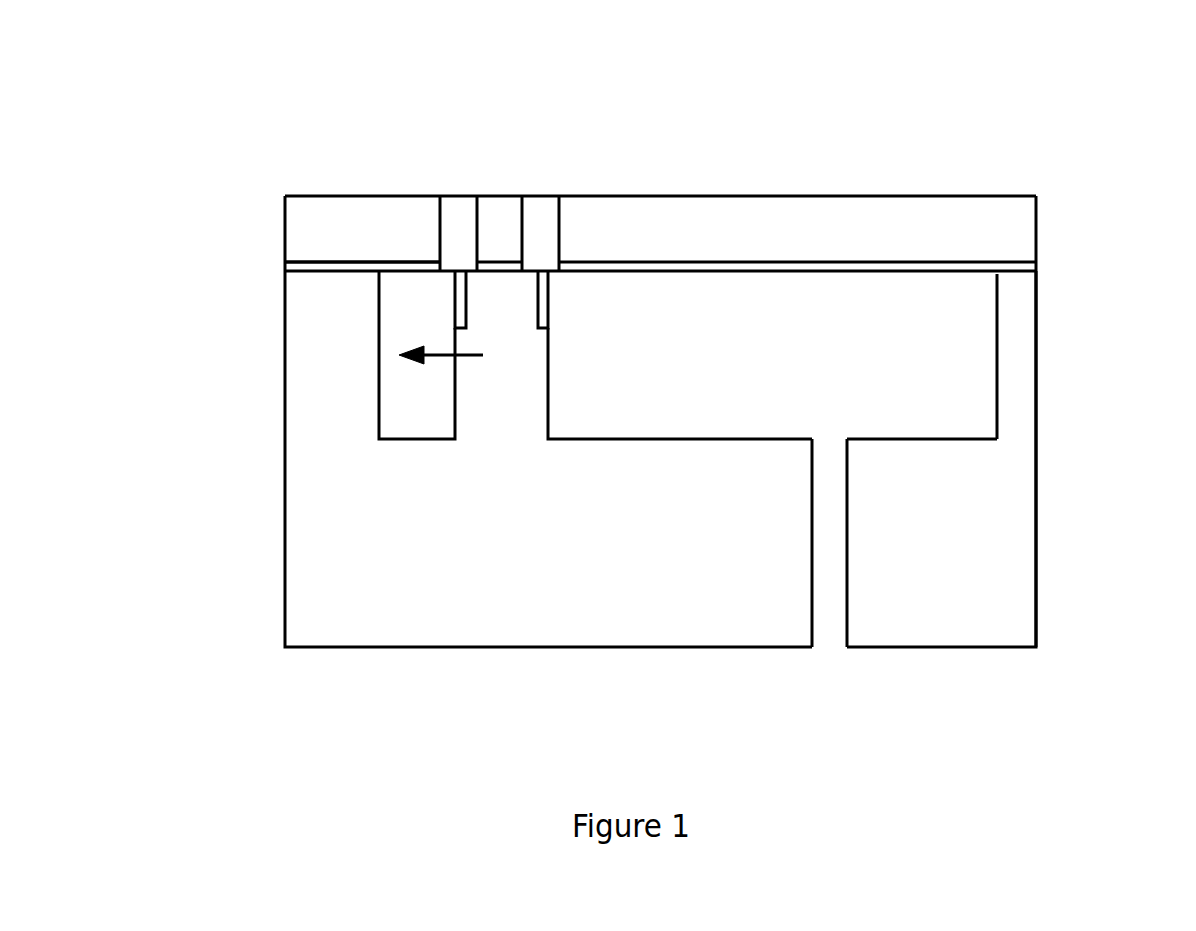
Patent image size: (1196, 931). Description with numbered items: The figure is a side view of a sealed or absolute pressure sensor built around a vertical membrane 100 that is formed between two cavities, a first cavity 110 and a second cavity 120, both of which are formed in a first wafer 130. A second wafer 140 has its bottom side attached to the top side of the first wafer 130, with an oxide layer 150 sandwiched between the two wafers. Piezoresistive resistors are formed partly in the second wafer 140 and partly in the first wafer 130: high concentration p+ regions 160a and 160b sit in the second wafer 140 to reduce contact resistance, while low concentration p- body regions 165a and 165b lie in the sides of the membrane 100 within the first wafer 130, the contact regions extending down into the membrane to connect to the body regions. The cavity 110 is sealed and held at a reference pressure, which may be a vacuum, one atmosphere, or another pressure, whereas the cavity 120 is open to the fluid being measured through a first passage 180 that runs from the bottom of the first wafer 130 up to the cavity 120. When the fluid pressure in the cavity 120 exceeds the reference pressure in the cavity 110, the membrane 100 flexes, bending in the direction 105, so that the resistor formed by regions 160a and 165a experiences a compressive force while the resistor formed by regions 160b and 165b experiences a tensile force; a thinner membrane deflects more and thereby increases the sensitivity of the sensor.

The vertical membrane 100 is at (512, 345).
The direction 105 is at (442, 352).
The first cavity 110 is at (408, 384).
The second cavity 120 is at (969, 327).
The first wafer 130 is at (997, 478).
The second wafer 140 is at (1017, 223).
The oxide layer 150 is at (1038, 262).
The high concentration p+ region 160a is at (447, 195).
The high concentration p+ region 160b is at (540, 195).
The low concentration p- body region 165a is at (452, 288).
The low concentration p- body region 165b is at (543, 293).
The first passage 180 is at (830, 580).